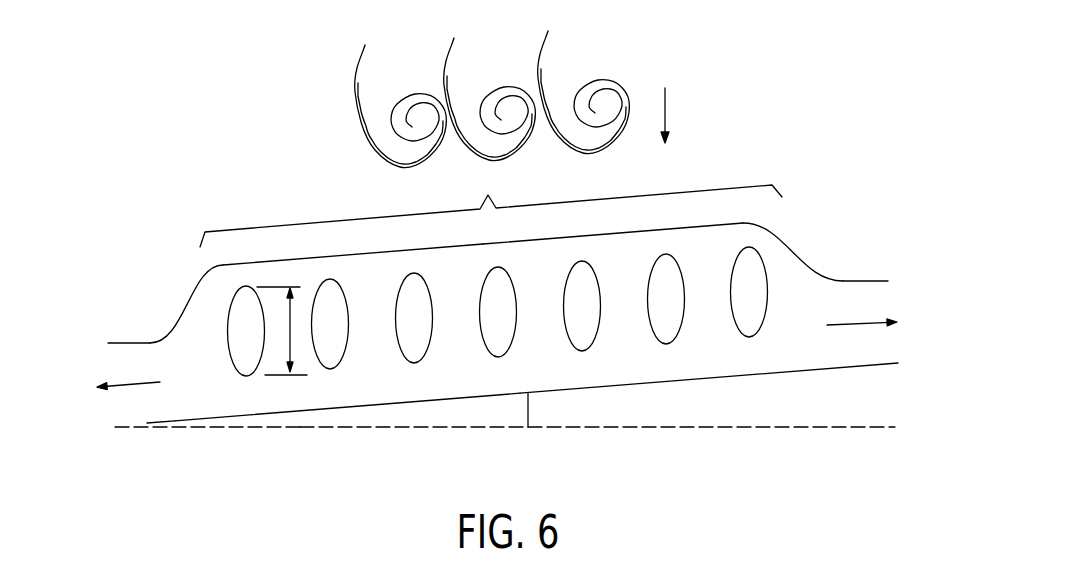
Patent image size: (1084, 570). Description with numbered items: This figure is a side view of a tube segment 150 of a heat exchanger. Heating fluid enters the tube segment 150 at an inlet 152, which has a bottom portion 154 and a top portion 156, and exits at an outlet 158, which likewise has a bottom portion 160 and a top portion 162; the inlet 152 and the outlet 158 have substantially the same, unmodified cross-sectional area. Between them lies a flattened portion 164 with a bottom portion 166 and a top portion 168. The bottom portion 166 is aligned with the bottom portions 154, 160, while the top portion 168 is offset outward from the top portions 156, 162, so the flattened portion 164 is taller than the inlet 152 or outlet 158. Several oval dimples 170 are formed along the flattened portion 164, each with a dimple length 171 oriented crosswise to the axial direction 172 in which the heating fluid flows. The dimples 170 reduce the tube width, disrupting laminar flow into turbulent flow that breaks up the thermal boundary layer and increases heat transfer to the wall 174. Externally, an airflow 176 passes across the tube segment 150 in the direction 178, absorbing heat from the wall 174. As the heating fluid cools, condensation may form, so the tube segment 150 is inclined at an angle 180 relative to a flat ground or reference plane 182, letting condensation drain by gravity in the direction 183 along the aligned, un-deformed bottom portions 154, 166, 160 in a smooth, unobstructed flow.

The tube segment 150 is at (148, 264).
The inlet 152 is at (148, 411).
The bottom portion of the inlet 154 is at (157, 425).
The top portion of the inlet 156 is at (124, 342).
The outlet 158 is at (877, 302).
The bottom portion of the outlet 160 is at (728, 378).
The top portion of the outlet 162 is at (873, 281).
The flattened portion 164 is at (491, 207).
The bottom portion of the flattened portion 166 is at (357, 407).
The top portion of the flattened portion 168 is at (290, 263).
The dimples 170 is at (243, 357).
The dimple length 171 is at (282, 331).
The axial direction 172 is at (853, 323).
The wall 174 is at (494, 244).
The airflow 176 is at (562, 73).
The direction 178 is at (666, 115).
The angle 180 is at (530, 402).
The flat ground or reference plane 182 is at (642, 428).
The direction 183 is at (134, 381).